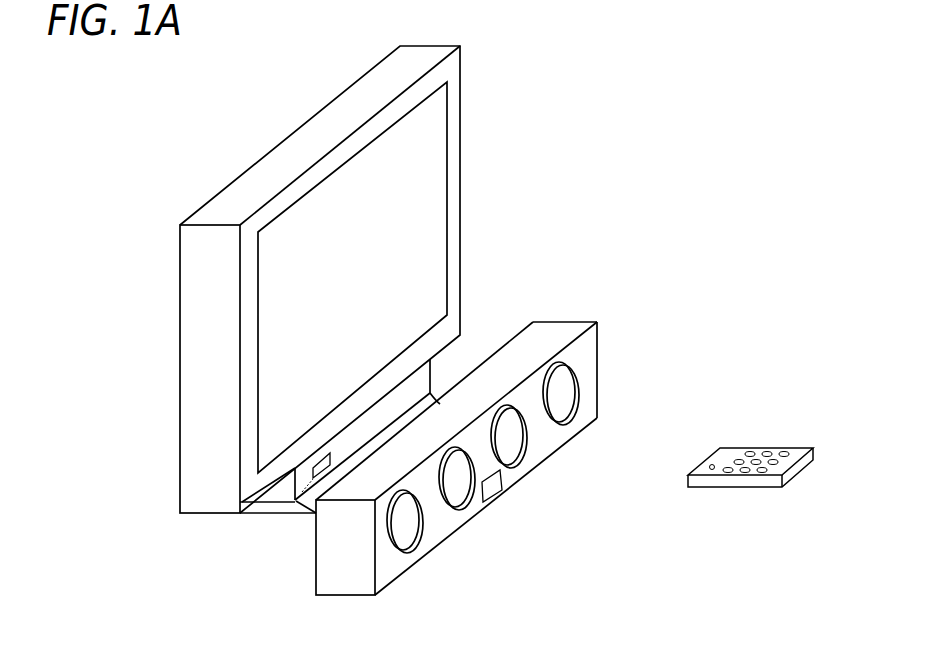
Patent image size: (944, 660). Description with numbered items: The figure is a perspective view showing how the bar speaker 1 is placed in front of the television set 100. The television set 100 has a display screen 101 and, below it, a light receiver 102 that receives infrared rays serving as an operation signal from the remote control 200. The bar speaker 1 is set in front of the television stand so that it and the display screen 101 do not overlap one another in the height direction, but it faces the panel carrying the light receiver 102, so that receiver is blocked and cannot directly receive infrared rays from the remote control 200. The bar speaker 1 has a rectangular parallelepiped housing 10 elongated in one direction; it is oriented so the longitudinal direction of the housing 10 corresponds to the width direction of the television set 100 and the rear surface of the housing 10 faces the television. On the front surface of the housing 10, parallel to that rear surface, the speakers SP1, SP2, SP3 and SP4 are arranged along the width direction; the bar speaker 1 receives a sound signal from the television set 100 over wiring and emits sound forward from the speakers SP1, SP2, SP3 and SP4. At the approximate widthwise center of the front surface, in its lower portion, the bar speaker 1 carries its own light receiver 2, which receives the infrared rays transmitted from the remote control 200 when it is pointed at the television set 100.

The bar speaker 1 is at (620, 359).
The light receiver 2 is at (495, 487).
The housing 10 is at (533, 322).
The television set 100 is at (178, 224).
The display screen 101 is at (433, 188).
The light receiver 102 is at (275, 508).
The remote control 200 is at (800, 447).
The speaker SP1 is at (567, 402).
The speaker SP2 is at (515, 437).
The speaker SP3 is at (460, 483).
The speaker SP4 is at (403, 530).